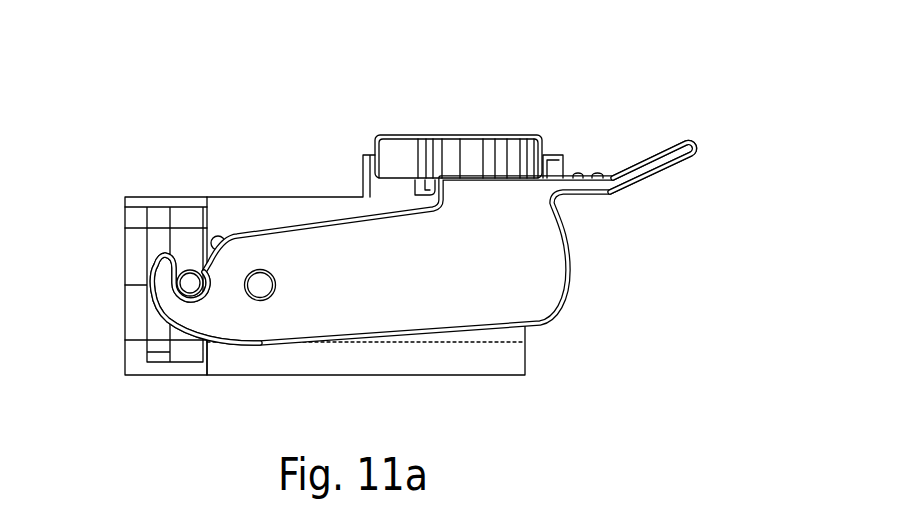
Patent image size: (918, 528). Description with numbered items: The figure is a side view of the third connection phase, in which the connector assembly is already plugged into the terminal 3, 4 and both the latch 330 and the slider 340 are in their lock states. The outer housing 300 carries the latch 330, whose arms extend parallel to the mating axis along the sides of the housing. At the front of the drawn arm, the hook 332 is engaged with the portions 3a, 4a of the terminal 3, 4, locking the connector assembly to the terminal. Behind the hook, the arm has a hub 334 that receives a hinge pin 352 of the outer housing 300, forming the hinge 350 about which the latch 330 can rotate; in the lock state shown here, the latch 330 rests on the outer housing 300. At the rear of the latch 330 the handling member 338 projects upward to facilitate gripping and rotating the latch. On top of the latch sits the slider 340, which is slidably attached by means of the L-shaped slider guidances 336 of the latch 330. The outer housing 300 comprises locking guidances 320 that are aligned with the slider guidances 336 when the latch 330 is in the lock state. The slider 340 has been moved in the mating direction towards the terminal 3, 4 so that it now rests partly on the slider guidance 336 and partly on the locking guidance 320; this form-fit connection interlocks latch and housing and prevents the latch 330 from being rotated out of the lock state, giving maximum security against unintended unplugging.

The terminal 3 is at (127, 286).
The terminal 4 is at (127, 245).
The pin / engagement portion of frame 3a is at (177, 215).
The pin / engagement portion of frame 4a is at (197, 270).
The outer housing 300 is at (275, 208).
The locking guidance 320 is at (388, 180).
The latch 330 is at (437, 282).
The hook 332 is at (165, 278).
The hub 334 is at (297, 351).
The hinge 350 is at (297, 351).
The hinge pin 352 is at (262, 292).
The slider guidance 336 is at (549, 165).
The handling member 338 is at (690, 142).
The slider 340 is at (457, 152).